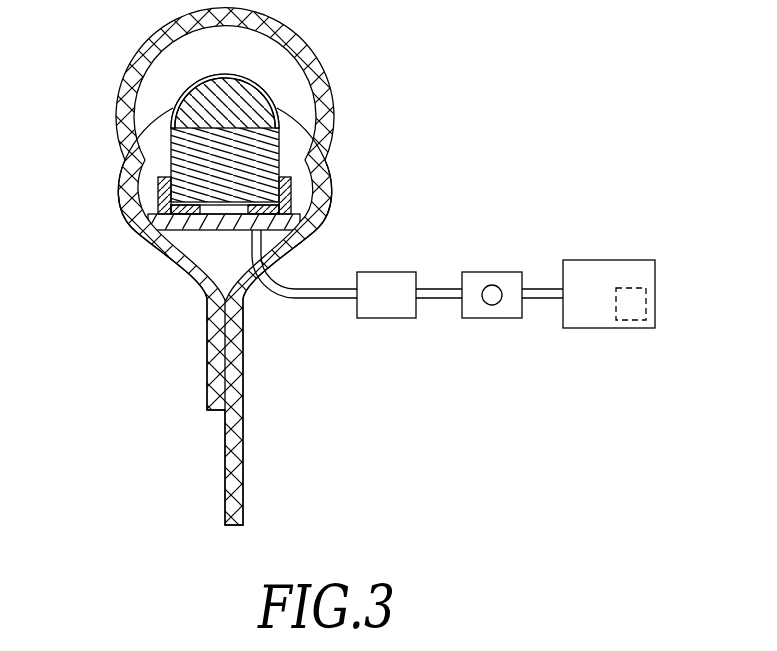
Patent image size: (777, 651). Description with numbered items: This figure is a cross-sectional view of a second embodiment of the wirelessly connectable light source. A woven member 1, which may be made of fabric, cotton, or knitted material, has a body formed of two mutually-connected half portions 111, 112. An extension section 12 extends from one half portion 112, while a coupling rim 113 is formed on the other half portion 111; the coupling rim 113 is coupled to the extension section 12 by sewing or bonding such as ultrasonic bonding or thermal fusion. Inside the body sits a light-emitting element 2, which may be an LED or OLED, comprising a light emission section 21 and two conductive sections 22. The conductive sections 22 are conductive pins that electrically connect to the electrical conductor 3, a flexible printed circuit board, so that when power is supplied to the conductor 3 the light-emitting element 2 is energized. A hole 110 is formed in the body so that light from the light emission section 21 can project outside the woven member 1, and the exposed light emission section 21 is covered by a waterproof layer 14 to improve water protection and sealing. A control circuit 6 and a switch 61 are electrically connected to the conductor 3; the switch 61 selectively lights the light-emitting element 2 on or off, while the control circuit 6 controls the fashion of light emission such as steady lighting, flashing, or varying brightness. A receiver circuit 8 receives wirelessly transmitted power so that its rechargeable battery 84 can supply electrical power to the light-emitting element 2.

The woven member 1 is at (134, 124).
The light-emitting element 2 is at (183, 90).
The light emission section 21 is at (218, 97).
The waterproof layer 14 is at (252, 92).
The hole 110 is at (268, 106).
The half portion 111 is at (127, 165).
The half portion 112 is at (323, 161).
The coupling rim 113 is at (207, 352).
The extension section 12 is at (241, 480).
The conductive section 22 is at (158, 187).
The electrical conductor 3 is at (300, 222).
The control circuit 6 is at (386, 304).
The switch 61 is at (490, 286).
The receiver circuit 8 is at (585, 270).
The rechargeable battery 84 is at (641, 303).